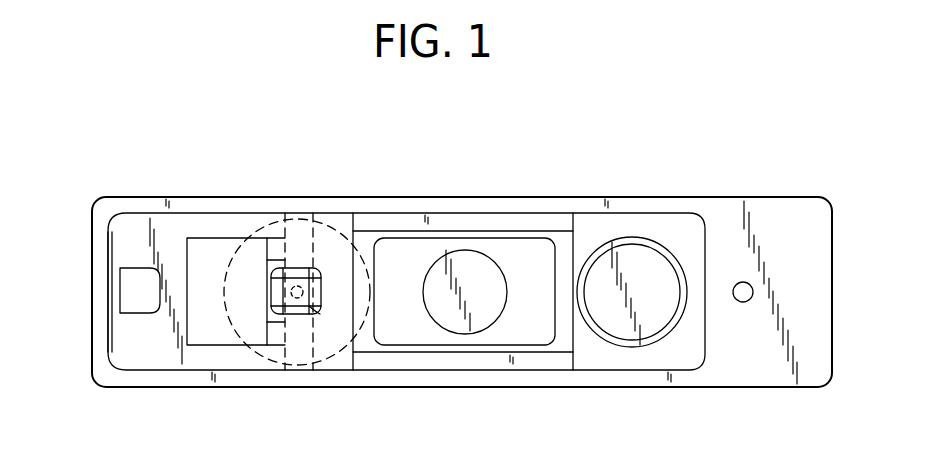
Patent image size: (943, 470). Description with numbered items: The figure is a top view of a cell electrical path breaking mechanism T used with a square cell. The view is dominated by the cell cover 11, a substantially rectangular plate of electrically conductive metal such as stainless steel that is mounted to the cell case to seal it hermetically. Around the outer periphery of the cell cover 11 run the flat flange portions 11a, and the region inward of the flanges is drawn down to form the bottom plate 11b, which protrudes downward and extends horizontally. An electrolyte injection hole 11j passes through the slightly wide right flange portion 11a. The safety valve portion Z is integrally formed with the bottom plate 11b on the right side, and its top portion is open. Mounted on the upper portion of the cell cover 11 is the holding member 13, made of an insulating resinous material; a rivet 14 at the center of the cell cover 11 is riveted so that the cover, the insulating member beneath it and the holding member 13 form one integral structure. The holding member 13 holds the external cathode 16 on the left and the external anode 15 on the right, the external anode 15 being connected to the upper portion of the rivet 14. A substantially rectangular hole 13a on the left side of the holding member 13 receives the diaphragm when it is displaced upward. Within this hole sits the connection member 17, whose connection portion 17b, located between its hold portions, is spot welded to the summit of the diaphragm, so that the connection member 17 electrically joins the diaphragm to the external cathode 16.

The cell electrical path breaking mechanism T is at (140, 185).
The cell cover 11 is at (729, 197).
The flat flange portion 11a is at (104, 262).
The bottom plate 11b is at (677, 230).
The electrolyte injection hole 11j is at (743, 282).
The safety valve portion Z is at (630, 273).
The holding member 13 is at (380, 222).
The substantially rectangular hole 13a is at (316, 314).
The rivet 14 is at (459, 271).
The external anode 15 is at (527, 258).
The external cathode 16 is at (208, 270).
The connection member 17 is at (310, 285).
The connection portion 17b is at (293, 278).